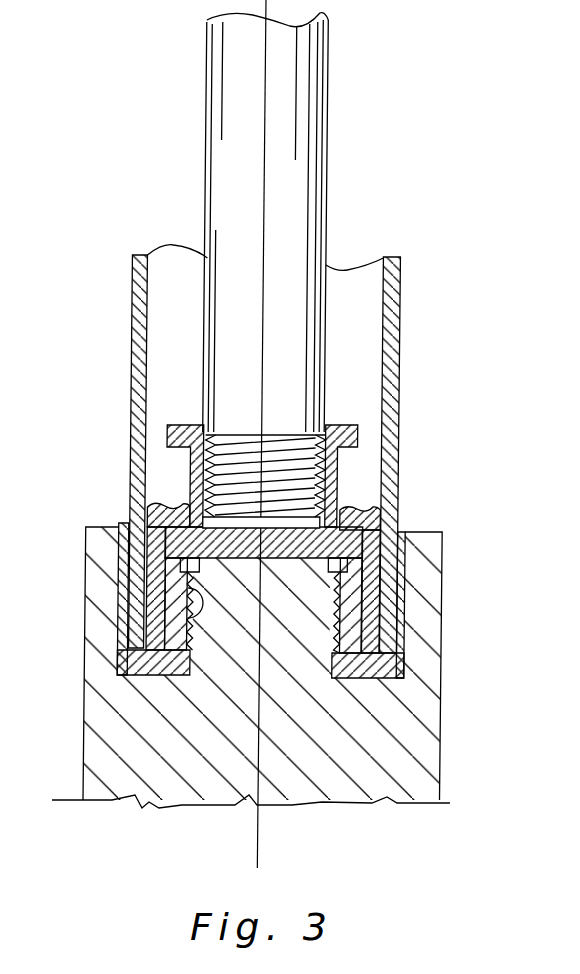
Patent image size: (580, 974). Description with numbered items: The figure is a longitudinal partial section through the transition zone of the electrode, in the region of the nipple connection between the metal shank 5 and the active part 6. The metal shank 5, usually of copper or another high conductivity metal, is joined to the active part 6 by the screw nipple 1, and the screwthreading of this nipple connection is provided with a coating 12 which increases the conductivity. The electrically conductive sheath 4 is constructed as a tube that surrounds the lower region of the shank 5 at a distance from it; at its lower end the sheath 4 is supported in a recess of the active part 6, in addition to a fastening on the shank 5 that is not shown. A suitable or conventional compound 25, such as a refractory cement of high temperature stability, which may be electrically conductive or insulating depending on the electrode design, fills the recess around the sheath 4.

The metal shank 5 is at (303, 72).
The sheath 4 is at (395, 311).
The screw nipple 1 is at (336, 460).
The coating 12 is at (207, 487).
The compound 25 is at (408, 661).
The active part 6 is at (424, 740).